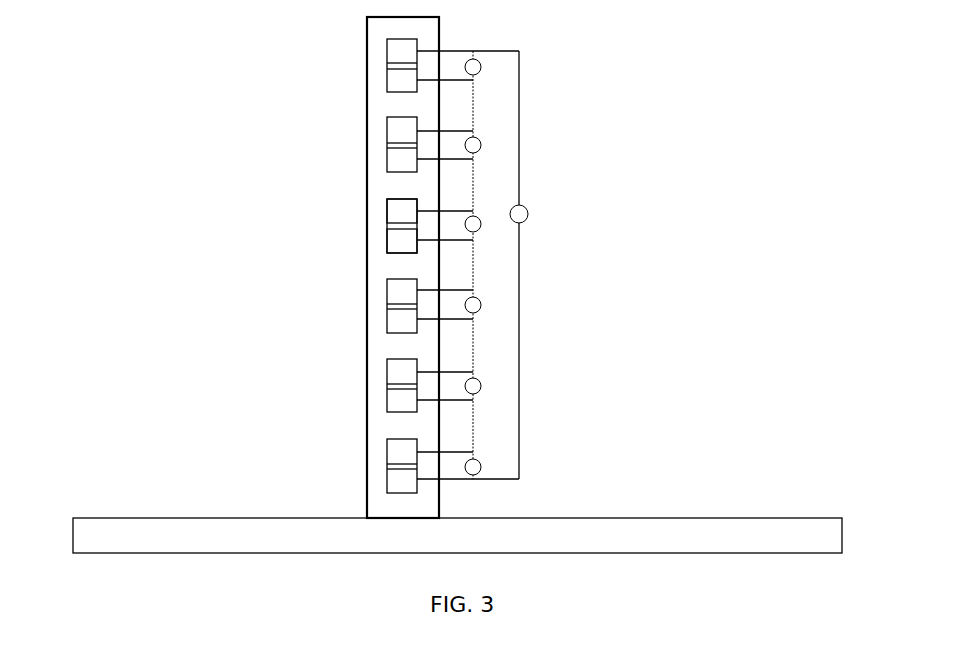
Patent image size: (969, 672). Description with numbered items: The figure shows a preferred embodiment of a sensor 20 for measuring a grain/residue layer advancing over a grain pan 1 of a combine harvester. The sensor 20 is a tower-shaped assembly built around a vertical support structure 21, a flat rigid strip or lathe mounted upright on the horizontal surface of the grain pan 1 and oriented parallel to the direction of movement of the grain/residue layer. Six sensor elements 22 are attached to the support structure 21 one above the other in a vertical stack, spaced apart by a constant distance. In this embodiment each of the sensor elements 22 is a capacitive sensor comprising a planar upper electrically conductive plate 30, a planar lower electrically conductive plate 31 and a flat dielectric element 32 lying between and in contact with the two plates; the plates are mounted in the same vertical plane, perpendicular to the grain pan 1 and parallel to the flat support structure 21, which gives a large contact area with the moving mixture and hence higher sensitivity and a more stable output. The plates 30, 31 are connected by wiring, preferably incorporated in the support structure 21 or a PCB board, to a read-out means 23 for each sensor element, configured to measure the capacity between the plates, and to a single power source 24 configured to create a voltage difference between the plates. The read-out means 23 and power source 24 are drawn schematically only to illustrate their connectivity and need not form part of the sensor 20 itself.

The grain pan 1 is at (103, 535).
The sensor 20 is at (360, 98).
The vertical support structure 21 is at (376, 28).
The sensor elements 22 is at (404, 196).
The read-out means 23 is at (475, 146).
The power source 24 is at (528, 216).
The upper electrically conductive plate 30 is at (366, 230).
The lower electrically conductive plate 31 is at (400, 244).
The dielectric element 32 is at (400, 226).